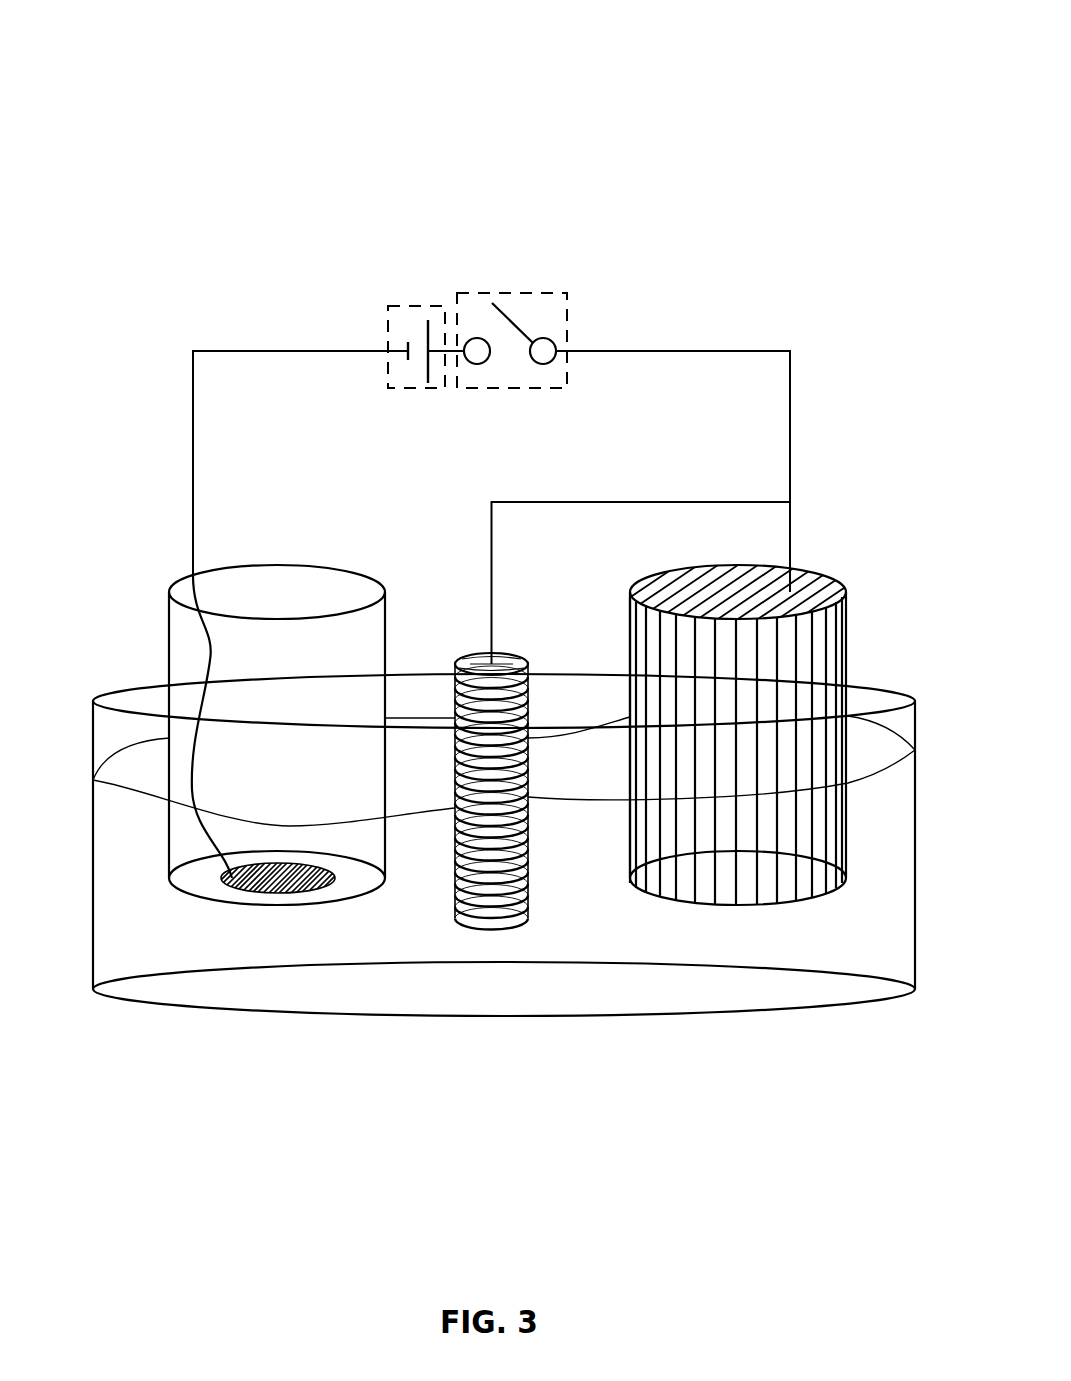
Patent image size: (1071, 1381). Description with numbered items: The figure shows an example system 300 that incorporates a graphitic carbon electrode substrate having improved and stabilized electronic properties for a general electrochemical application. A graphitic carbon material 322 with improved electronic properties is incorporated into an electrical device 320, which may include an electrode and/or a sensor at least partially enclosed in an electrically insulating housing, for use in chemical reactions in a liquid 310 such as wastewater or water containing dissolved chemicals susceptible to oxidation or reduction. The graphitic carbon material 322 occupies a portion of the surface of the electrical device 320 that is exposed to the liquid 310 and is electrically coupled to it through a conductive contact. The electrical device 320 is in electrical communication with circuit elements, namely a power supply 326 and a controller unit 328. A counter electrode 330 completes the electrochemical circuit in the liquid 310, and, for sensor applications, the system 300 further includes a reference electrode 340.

The system 300 is at (862, 35).
The liquid 310 is at (106, 820).
The electrical device 320 is at (152, 632).
The graphitic carbon material 322 is at (233, 883).
The power supply 326 is at (382, 320).
The controller unit 328 is at (570, 308).
The counter electrode 330 is at (848, 630).
The reference electrode 340 is at (513, 662).